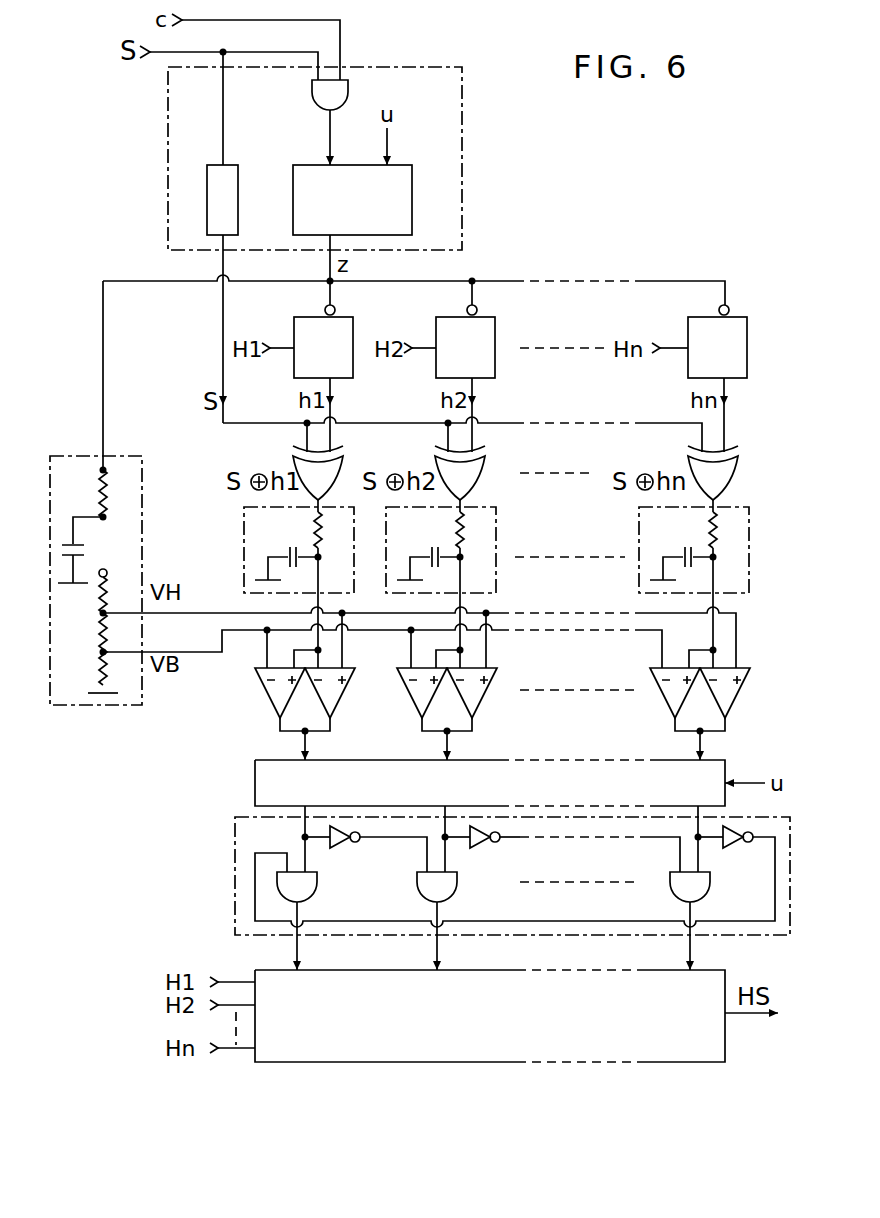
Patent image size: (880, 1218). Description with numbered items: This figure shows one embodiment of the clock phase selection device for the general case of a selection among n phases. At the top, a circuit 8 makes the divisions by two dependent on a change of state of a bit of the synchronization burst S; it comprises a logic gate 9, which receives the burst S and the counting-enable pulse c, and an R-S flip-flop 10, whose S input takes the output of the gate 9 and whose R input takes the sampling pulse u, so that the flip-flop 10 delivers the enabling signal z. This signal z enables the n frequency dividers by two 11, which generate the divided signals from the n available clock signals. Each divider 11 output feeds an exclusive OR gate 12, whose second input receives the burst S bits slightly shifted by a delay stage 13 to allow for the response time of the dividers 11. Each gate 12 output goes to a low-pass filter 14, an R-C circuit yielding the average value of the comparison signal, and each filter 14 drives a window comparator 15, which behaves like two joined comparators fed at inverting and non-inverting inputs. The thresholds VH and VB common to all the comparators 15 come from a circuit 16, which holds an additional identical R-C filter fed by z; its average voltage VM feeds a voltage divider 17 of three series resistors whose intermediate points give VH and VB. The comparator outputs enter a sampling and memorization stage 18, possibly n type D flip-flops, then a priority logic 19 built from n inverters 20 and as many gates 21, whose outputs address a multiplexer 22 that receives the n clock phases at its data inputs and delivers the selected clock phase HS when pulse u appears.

The circuit 8 is at (468, 149).
The logic gate 9 is at (322, 93).
The flip-flop 10 is at (299, 188).
The frequency dividers by 2 11 is at (303, 325).
The exclusive OR gate 12 is at (337, 470).
The delay stage 13 is at (212, 188).
The low-pass filter 14 is at (244, 546).
The window comparator 15 is at (260, 705).
The circuit 16 is at (151, 531).
The voltage divider 17 is at (88, 632).
The sampling and memorization stage 18 is at (263, 788).
The priority logic 19 is at (228, 872).
The inverter 20 is at (338, 851).
The gate 21 is at (303, 891).
The multiplexer 22 is at (462, 1048).